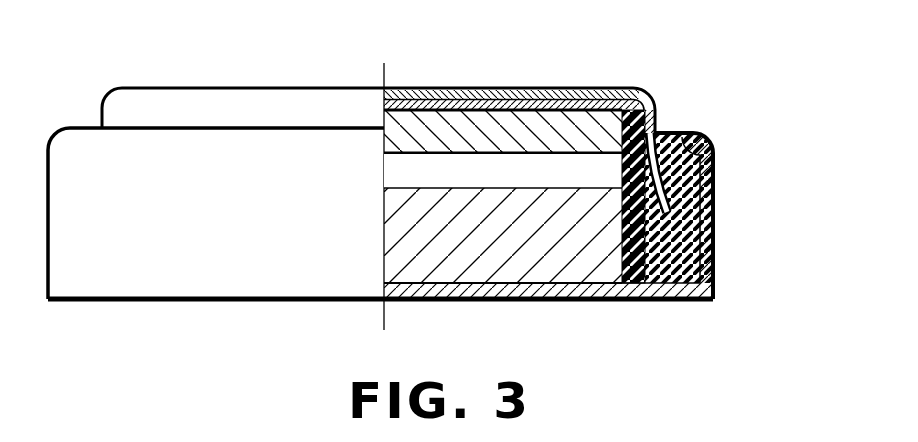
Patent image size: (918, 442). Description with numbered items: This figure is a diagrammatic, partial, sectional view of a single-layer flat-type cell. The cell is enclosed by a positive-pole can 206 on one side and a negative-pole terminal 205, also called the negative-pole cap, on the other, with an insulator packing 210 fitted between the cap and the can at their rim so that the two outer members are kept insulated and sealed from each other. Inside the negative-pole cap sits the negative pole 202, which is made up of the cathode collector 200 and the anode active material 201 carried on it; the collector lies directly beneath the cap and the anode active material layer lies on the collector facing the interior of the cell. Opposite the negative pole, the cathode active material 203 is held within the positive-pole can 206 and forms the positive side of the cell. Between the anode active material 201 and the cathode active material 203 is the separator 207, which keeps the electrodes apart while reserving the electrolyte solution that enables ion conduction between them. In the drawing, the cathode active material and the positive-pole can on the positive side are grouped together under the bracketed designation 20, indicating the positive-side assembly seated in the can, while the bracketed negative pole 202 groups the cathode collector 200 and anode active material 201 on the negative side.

The negative electrode unit 20 is at (453, 192).
The cathode collector 200 is at (533, 91).
The anode active material 201 is at (527, 45).
The negative pole 202 is at (527, 76).
The cathode active material 203 is at (597, 233).
The negative-pole terminal 205 is at (437, 89).
The positive-pole can 206 is at (802, 225).
The separator 207 is at (467, 182).
The insulator packing 210 is at (665, 133).